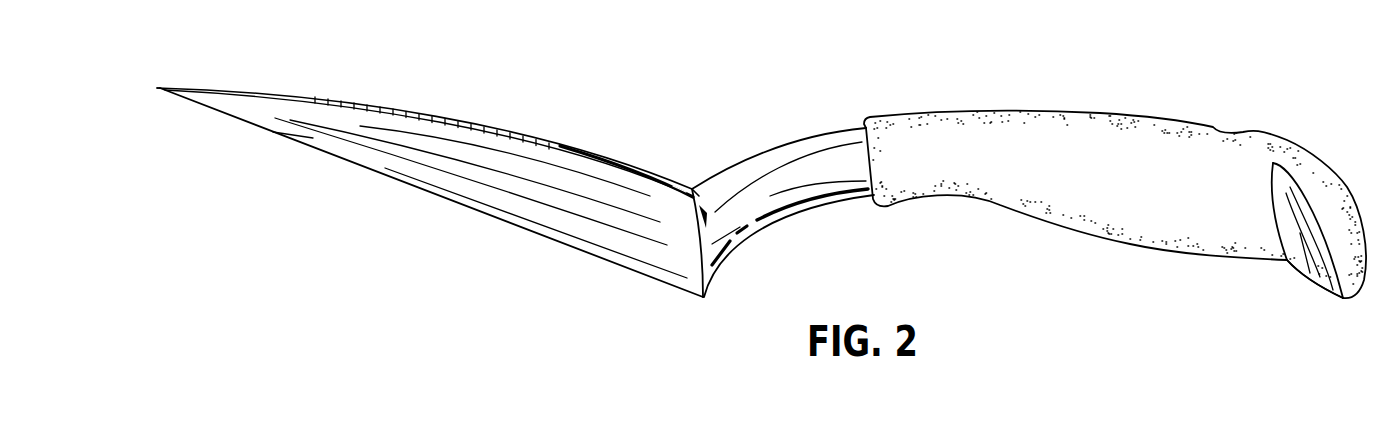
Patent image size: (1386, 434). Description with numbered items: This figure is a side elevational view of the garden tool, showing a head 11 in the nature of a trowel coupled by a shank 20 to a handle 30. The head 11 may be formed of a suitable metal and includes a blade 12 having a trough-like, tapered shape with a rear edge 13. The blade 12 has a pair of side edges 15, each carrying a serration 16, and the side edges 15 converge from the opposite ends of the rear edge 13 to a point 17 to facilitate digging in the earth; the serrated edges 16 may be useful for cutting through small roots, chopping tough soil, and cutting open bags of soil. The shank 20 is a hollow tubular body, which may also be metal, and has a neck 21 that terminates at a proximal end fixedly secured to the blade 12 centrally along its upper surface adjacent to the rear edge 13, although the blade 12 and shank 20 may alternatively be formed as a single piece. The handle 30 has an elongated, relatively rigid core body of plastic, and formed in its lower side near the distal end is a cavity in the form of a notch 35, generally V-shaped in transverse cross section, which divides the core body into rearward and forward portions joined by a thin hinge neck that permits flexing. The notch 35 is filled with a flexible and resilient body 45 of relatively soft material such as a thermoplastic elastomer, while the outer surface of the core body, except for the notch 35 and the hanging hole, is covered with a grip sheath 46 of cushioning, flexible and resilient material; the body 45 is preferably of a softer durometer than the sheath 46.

The head 11 is at (328, 181).
The blade 12 is at (470, 183).
The rear edge 13 is at (696, 196).
The side edges 15 is at (655, 177).
The serration 16 is at (442, 120).
The point 17 is at (157, 88).
The shank 20 is at (852, 216).
The neck 21 is at (757, 222).
The handle 30 is at (1290, 124).
The notch 35 is at (1303, 205).
The flexible and resilient body 45 is at (1310, 277).
The grip sheath 46 is at (1032, 120).